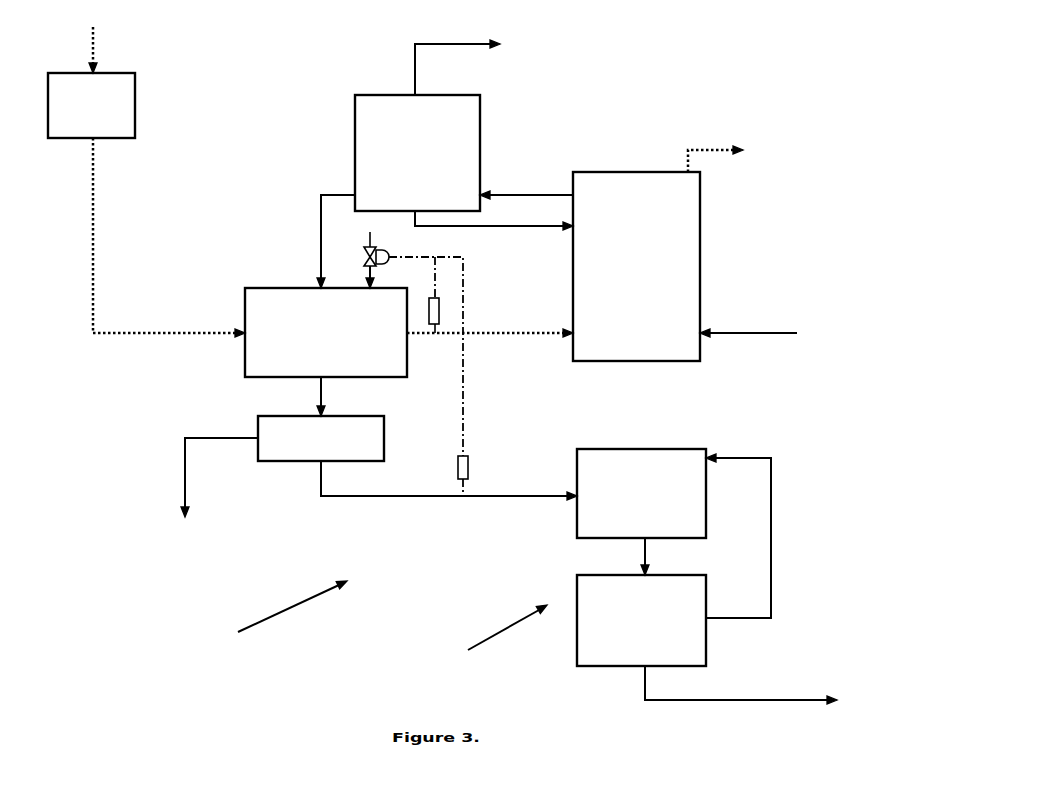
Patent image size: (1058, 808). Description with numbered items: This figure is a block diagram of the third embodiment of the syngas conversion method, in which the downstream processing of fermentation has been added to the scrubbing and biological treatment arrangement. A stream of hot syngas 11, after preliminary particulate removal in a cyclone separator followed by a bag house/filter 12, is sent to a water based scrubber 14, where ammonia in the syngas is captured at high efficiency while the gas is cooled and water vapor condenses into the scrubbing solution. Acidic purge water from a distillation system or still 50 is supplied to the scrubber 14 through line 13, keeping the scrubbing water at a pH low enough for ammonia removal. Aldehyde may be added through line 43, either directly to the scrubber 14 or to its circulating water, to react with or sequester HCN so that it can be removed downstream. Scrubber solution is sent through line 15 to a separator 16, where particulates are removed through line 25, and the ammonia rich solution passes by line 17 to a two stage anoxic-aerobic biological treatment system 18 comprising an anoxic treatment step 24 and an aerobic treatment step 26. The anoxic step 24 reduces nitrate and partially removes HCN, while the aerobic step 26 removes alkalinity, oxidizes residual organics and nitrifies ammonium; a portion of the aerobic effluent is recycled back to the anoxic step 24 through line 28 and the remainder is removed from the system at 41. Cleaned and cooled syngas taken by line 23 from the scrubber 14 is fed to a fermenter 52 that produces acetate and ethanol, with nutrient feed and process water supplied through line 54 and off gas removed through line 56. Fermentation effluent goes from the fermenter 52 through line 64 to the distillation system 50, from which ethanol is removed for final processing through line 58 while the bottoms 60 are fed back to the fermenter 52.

The stream of hot syngas 11 is at (102, 247).
The bag house/filter 12 is at (138, 93).
The scrubbing solution line 13 is at (313, 218).
The water based scrubber 14 is at (326, 332).
The scrubber solution line 15 is at (320, 388).
The separator 16 is at (321, 438).
The ammonia rich solution line 17 is at (478, 503).
The anoxic-aerobic biological treatment system 18 is at (495, 640).
The cooled syngas line 23 is at (545, 337).
The anoxic treatment step 24 is at (641, 493).
The particulates removal line 25 is at (215, 494).
The aerobic treatment step 26 is at (641, 602).
The recycle line 28 is at (778, 522).
The effluent removal 41 is at (787, 697).
The aldehyde addition line 43 is at (363, 238).
The distillation system 50 is at (417, 153).
The fermenter 52 is at (636, 266).
The nutrient feed and process water line 54 is at (767, 335).
The off gas line 56 is at (728, 158).
The ethanol line 58 is at (475, 66).
The bottoms 60 is at (545, 228).
The fermentation effluent line 64 is at (493, 188).